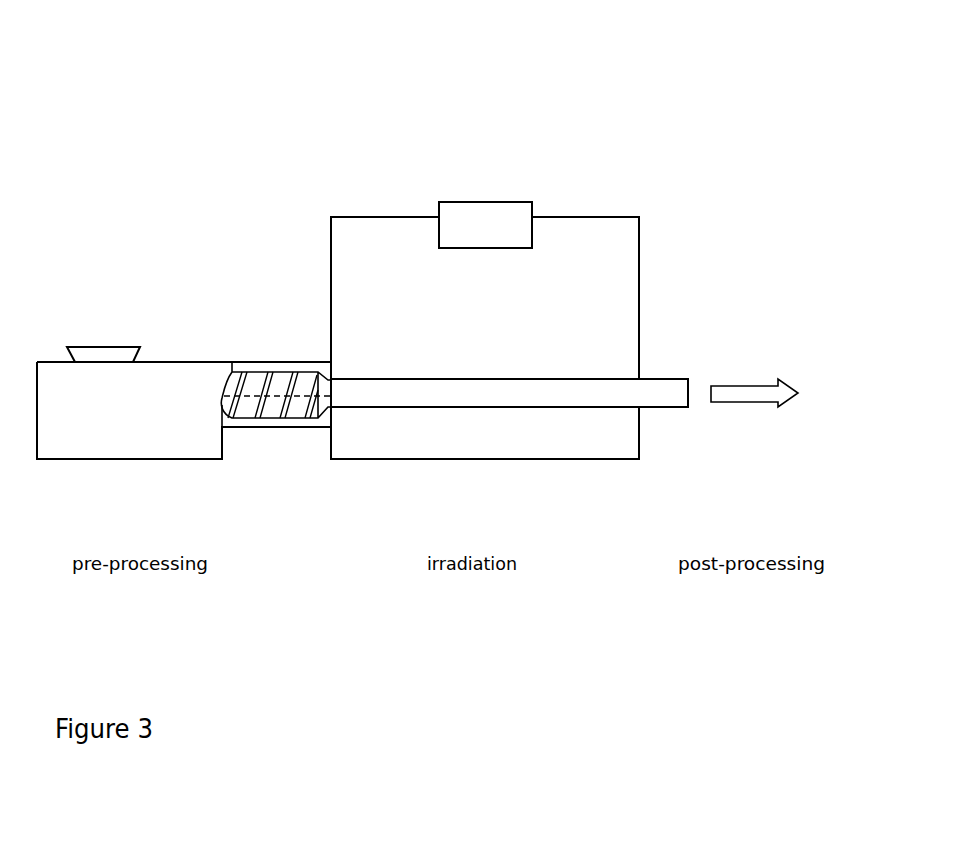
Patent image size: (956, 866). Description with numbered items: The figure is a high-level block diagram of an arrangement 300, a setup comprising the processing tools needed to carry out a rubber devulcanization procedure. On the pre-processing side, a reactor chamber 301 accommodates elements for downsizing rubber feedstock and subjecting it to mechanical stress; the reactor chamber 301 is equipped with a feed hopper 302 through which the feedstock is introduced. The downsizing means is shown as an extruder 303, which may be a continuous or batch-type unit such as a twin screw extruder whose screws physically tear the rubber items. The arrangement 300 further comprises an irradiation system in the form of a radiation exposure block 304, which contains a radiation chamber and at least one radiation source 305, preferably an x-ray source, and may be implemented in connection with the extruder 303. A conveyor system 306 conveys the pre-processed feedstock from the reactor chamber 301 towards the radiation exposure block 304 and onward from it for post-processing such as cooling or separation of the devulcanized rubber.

The arrangement 300 is at (108, 120).
The reactor chamber 301 is at (157, 448).
The feed hopper 302 is at (98, 353).
The extruder 303 is at (268, 378).
The radiation exposure block 304 is at (633, 248).
The radiation source 305 is at (477, 212).
The conveyor system 306 is at (658, 388).